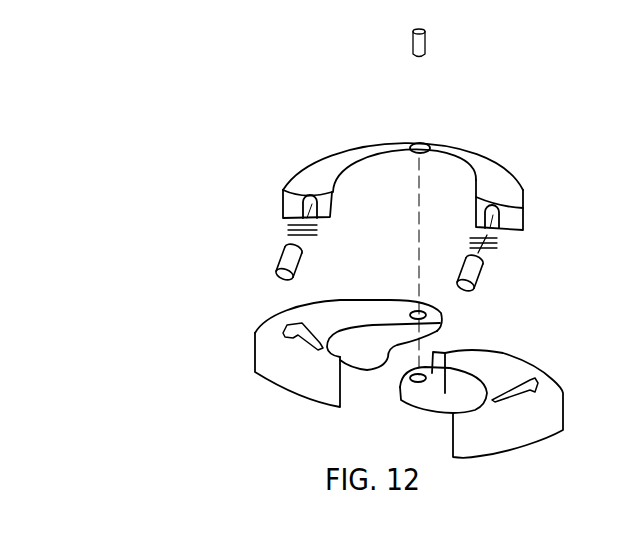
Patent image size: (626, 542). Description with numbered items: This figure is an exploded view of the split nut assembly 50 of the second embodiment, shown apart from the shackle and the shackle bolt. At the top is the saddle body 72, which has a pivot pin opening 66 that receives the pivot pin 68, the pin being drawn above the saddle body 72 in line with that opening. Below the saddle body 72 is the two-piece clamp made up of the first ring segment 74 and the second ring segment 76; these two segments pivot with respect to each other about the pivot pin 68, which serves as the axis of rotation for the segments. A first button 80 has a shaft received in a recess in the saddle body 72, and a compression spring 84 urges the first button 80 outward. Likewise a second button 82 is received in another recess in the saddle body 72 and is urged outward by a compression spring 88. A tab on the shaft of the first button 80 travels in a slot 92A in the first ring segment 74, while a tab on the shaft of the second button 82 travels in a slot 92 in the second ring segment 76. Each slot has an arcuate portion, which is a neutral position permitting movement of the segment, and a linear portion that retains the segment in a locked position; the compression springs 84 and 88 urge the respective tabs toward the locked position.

The split nut assembly 50 is at (196, 359).
The pivot pin opening 66 is at (427, 145).
The pivot pin 68 is at (413, 50).
The saddle body 72 is at (306, 168).
The first ring segment 74 is at (543, 372).
The second ring segment 76 is at (272, 322).
The first button 80 is at (479, 273).
The second button 82 is at (302, 258).
The compression spring 84 is at (512, 243).
The compression spring 88 is at (268, 228).
The slot 92 is at (300, 336).
The slot 92A is at (21, 307).